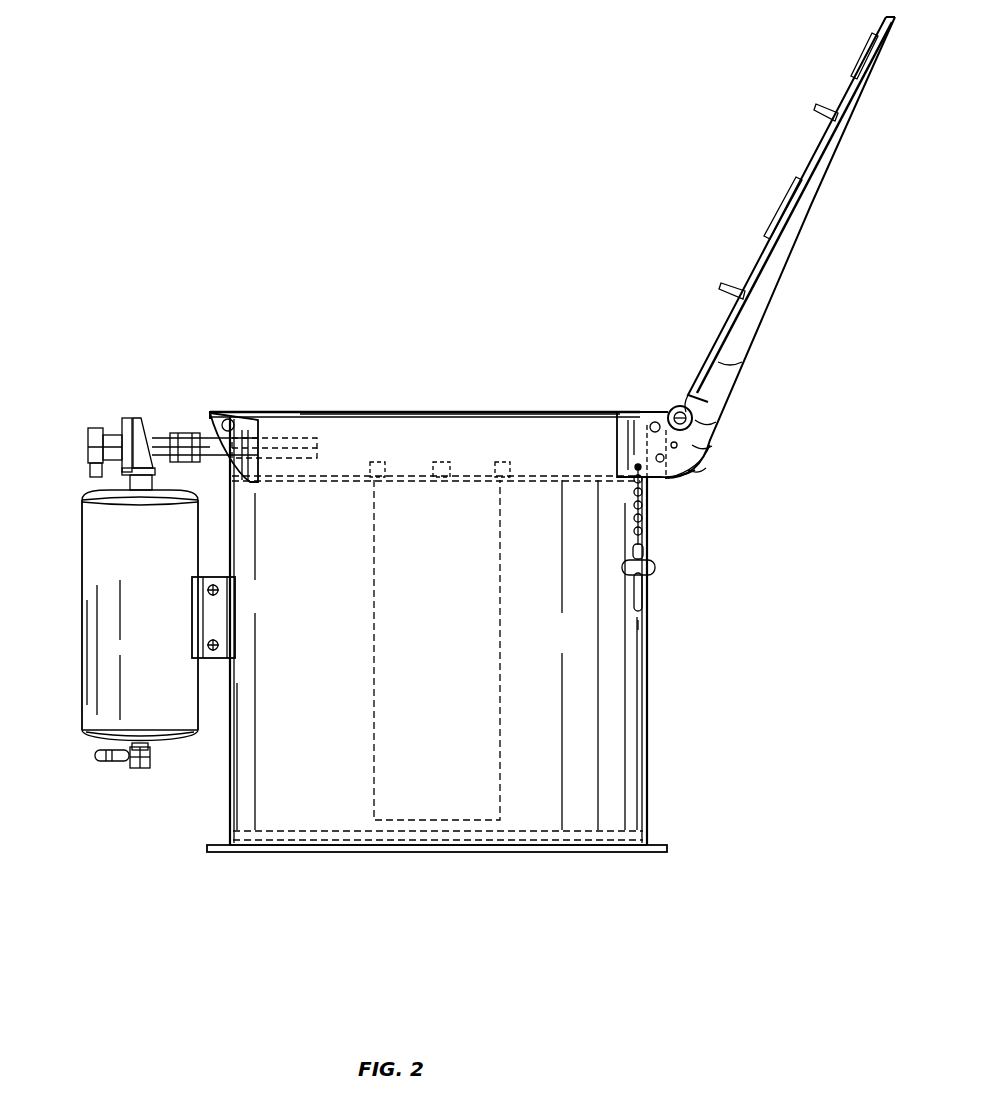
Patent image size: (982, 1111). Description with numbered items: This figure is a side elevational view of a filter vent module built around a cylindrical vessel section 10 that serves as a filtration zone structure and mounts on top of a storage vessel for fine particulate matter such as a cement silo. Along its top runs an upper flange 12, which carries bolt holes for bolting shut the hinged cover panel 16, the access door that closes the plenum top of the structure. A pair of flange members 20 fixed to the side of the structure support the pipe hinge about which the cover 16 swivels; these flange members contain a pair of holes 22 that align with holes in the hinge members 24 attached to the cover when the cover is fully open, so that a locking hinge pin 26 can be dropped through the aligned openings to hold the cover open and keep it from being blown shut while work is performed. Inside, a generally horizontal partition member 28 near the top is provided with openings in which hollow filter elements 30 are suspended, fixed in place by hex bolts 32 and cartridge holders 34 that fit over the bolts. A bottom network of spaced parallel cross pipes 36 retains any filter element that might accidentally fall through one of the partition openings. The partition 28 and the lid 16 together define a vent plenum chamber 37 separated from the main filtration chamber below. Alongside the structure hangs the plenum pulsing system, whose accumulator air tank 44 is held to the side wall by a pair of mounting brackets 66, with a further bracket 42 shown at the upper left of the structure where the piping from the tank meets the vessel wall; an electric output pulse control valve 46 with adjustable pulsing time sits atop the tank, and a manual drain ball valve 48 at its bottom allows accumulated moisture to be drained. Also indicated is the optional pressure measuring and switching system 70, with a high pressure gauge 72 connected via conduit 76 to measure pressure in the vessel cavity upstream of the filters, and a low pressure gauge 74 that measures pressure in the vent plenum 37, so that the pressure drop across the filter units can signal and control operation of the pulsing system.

The cylindrical vessel section 10 is at (204, 776).
The upper flange 12 is at (370, 412).
The hinged cover panel 16 is at (807, 238).
The flange members 20 is at (663, 410).
The holes 22 is at (663, 478).
The hinge members 24 is at (692, 405).
The locking hinge pin 26 is at (645, 585).
The partition member 28 is at (326, 478).
The hollow filter elements 30 is at (518, 702).
The hex bolts 32 is at (505, 465).
The cartridge holders 34 is at (450, 465).
The cross pipes 36 is at (257, 832).
The vent plenum chamber 37 is at (462, 425).
The mounting bracket 42 is at (237, 413).
The accumulator air tank 44 is at (82, 618).
The electric output pulse control valve 46 is at (123, 420).
The manual drain ball valve 48 is at (130, 768).
The mounting brackets 66 is at (215, 625).
The pressure measuring and switching system 70 is at (278, 447).
The high pressure gauge 72 is at (312, 447).
The low pressure gauge 74 is at (183, 430).
The conduit 76 is at (163, 430).